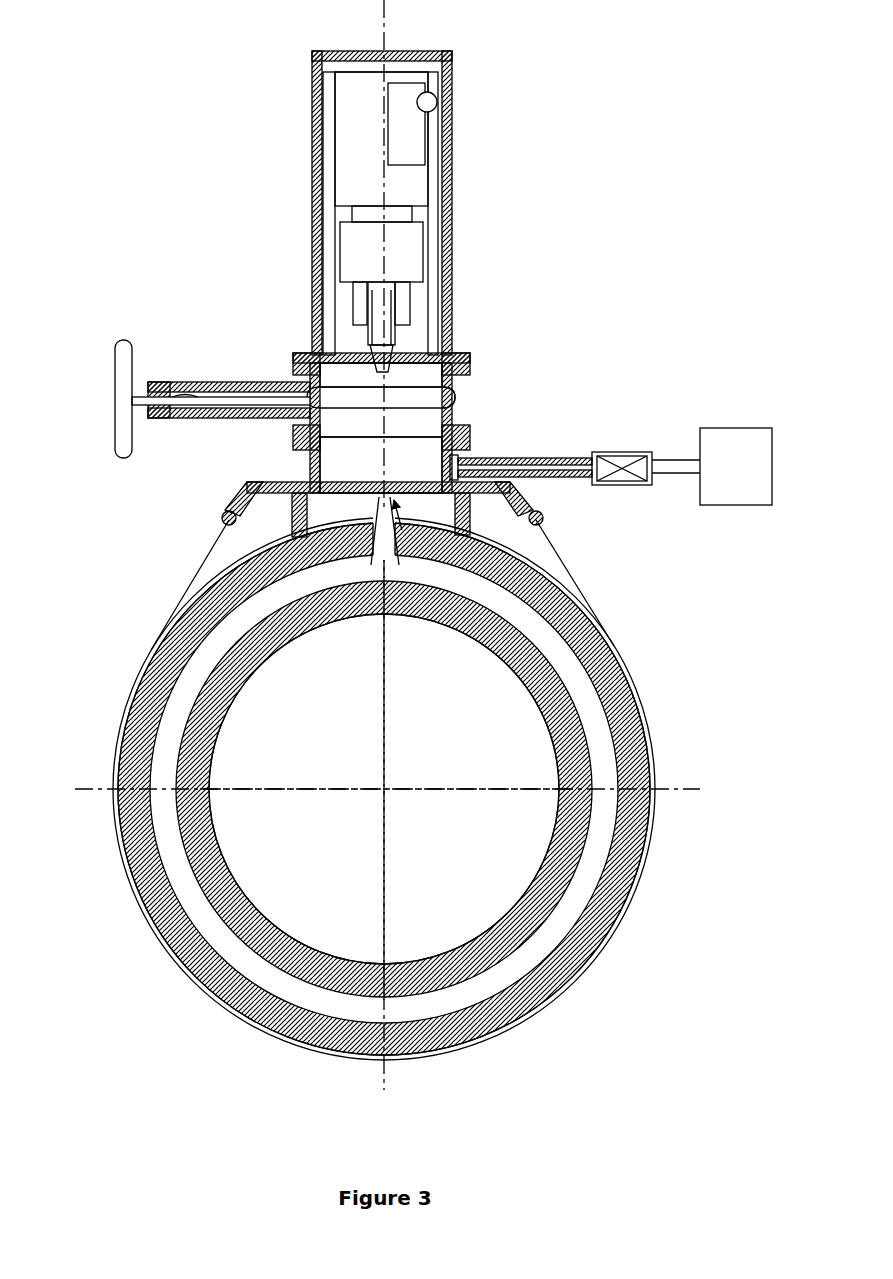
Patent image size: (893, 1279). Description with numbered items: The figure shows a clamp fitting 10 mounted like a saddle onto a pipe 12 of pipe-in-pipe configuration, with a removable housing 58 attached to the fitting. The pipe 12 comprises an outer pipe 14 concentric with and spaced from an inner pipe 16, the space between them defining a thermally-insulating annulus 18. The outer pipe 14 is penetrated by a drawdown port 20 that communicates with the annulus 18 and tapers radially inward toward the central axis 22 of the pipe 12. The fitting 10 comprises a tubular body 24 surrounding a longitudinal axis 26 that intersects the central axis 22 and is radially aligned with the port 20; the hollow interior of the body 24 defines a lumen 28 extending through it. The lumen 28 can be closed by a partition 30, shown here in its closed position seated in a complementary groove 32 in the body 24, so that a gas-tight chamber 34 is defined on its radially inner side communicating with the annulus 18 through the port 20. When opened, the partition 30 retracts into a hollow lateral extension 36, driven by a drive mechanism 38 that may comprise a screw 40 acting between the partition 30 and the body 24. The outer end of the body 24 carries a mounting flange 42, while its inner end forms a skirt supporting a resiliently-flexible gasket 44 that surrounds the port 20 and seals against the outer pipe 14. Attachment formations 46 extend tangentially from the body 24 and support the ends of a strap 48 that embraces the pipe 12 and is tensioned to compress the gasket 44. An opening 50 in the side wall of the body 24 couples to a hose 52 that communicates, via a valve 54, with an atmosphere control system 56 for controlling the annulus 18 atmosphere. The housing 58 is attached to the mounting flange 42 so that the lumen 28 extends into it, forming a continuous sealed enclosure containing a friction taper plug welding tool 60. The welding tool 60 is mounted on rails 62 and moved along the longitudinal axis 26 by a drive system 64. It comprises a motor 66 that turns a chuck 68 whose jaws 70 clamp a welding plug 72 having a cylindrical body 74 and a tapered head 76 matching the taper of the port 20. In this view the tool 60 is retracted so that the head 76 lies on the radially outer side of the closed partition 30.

The clamp fitting 10 is at (556, 372).
The pipe 12 is at (112, 666).
The outer pipe 14 is at (618, 665).
The inner pipe 16 is at (282, 655).
The thermally-insulating annulus 18 is at (190, 707).
The port 20 is at (393, 568).
The central axis 22 is at (388, 785).
The tubular body 24 is at (296, 437).
The longitudinal axis 26 is at (387, 683).
The lumen 28 is at (381, 376).
The partition 30 is at (450, 397).
The groove 32 is at (452, 404).
The chamber 34 is at (318, 455).
The lateral extension 36 is at (222, 385).
The drive mechanism 38 is at (115, 372).
The screw 40 is at (197, 398).
The mounting flange 42 is at (462, 367).
The gasket 44 is at (294, 530).
The attachment formations 46 is at (236, 505).
The strap 48 is at (193, 572).
The opening 50 is at (445, 468).
The hose 52 is at (535, 458).
The valve 54 is at (622, 452).
The atmosphere control system 56 is at (733, 432).
The housing 58 is at (455, 118).
The friction taper plug welding tool 60 is at (355, 88).
The rails 62 is at (323, 210).
The drive system 64 is at (418, 138).
The motor 66 is at (352, 125).
The chuck 68 is at (415, 255).
The jaws 70 is at (360, 300).
The welding plug 72 is at (396, 310).
The cylindrical body 74 is at (386, 345).
The tapered head 76 is at (368, 352).